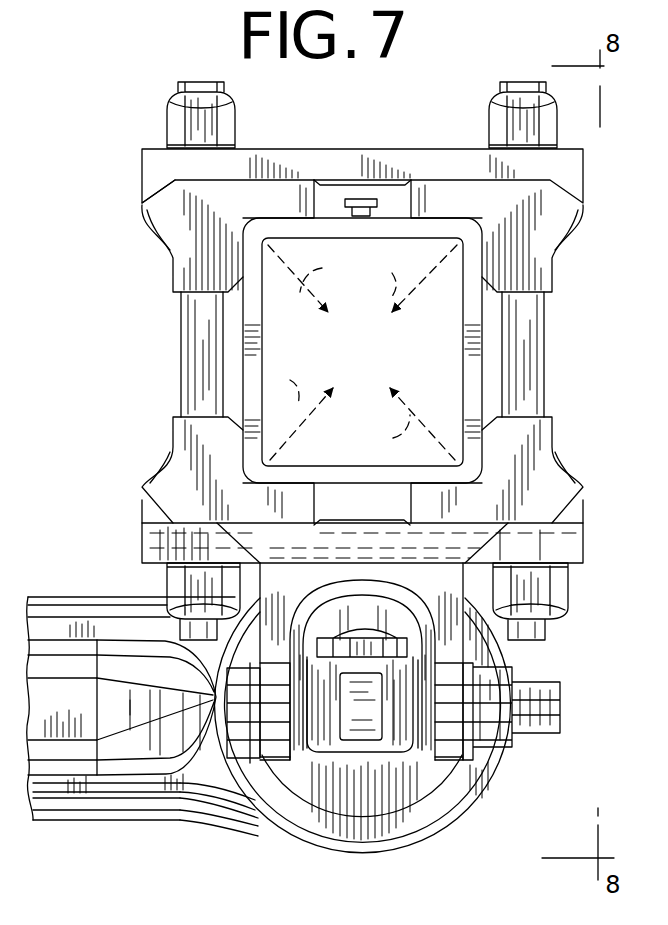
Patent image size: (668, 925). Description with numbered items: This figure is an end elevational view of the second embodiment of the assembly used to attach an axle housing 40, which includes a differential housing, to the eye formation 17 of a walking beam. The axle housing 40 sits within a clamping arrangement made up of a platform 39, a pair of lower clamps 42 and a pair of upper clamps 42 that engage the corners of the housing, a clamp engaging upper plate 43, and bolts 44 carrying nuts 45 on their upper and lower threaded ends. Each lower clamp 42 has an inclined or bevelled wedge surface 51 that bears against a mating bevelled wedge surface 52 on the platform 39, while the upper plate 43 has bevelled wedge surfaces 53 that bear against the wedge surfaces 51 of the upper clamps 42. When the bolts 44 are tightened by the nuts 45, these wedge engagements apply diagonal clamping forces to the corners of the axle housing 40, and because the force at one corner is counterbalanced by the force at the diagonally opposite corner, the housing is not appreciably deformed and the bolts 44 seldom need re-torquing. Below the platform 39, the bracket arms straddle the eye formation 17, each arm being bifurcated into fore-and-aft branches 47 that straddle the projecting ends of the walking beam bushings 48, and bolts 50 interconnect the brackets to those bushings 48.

The eye formation 17 is at (470, 818).
The platform 39 is at (142, 541).
The axle housing 40 is at (463, 362).
The corner engaging clamps 42 is at (167, 243).
The upper plate 43 is at (365, 146).
The bolts 44 is at (182, 355).
The nuts 45 is at (237, 122).
The fore-and-aft branches 47 is at (473, 790).
The walking beam bushings 48 is at (382, 758).
The bolts 50 is at (236, 740).
The bevelled wedge surface 51 is at (158, 212).
The bevelled wedge surface 52 is at (584, 524).
The bevelled wedge surfaces 53 is at (160, 205).